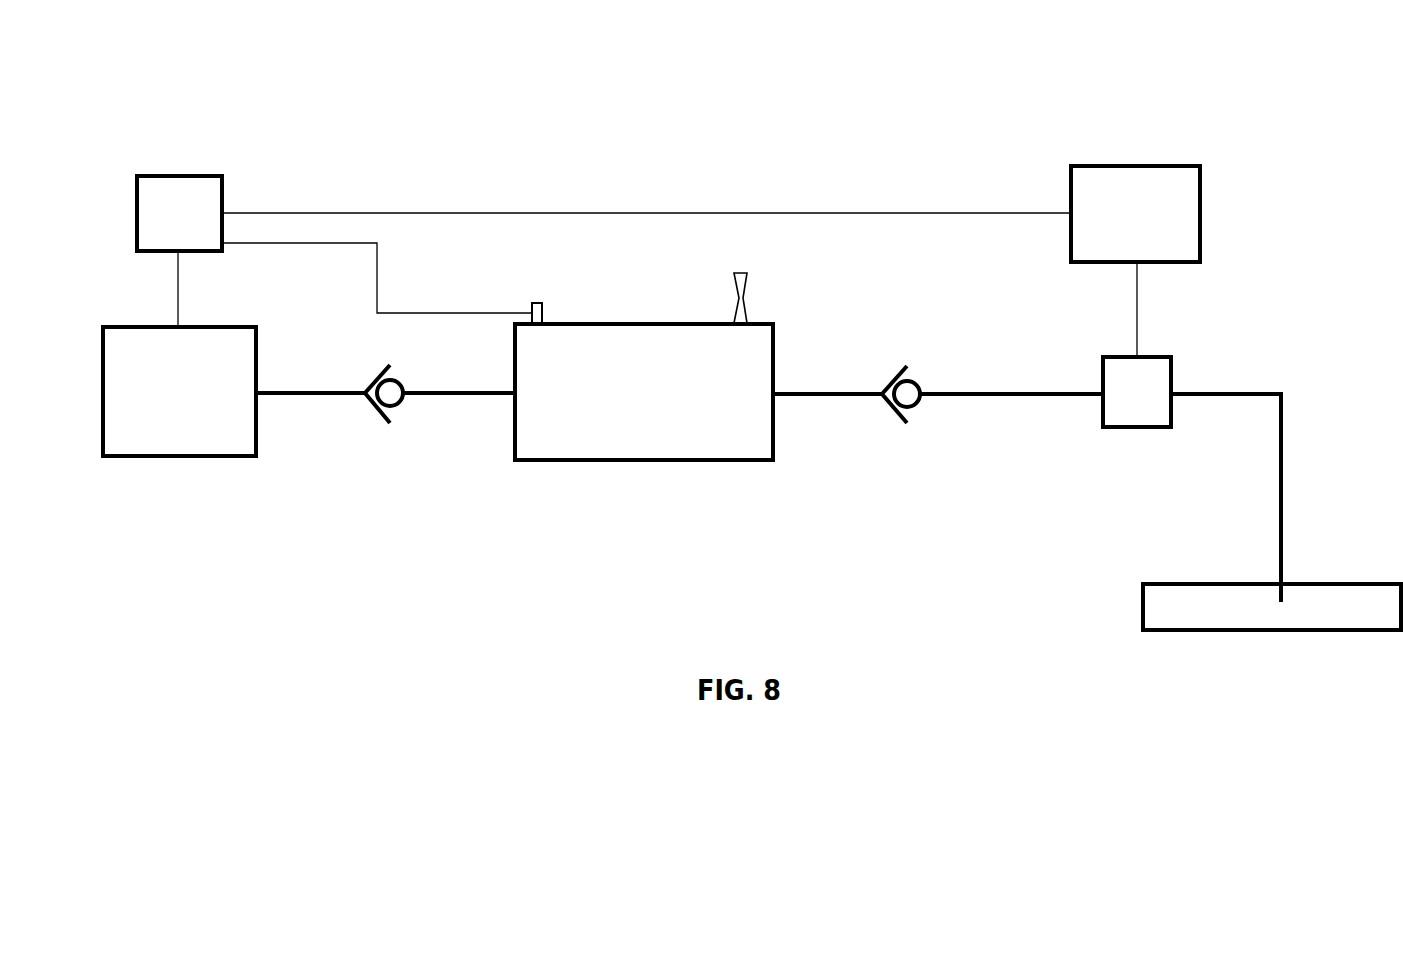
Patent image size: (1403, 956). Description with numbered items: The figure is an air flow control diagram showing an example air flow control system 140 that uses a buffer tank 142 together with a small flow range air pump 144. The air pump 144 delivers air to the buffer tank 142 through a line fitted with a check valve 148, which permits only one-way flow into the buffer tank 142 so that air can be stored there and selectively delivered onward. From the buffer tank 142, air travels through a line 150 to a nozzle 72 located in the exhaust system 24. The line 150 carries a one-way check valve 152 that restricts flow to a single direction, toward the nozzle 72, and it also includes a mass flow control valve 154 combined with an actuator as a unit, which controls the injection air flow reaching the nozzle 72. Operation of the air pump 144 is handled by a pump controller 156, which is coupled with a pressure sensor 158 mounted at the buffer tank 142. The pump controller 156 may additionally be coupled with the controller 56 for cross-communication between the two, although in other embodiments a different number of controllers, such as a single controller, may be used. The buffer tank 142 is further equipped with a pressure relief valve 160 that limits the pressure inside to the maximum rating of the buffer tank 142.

The air flow control system 140 is at (345, 392).
The buffer tank 142 is at (677, 410).
The small flow range air pump 144 is at (204, 406).
The check valve 148 is at (373, 412).
The line 150 is at (1025, 392).
The one-way check valve 152 is at (897, 417).
The mass flow control valve 154 is at (1162, 408).
The pump controller 156 is at (203, 231).
The pressure sensor 158 is at (544, 311).
The pressure relief valve 160 is at (748, 302).
The controller 56 is at (1154, 235).
The nozzle 72 is at (1283, 593).
The exhaust system 24 is at (1219, 572).